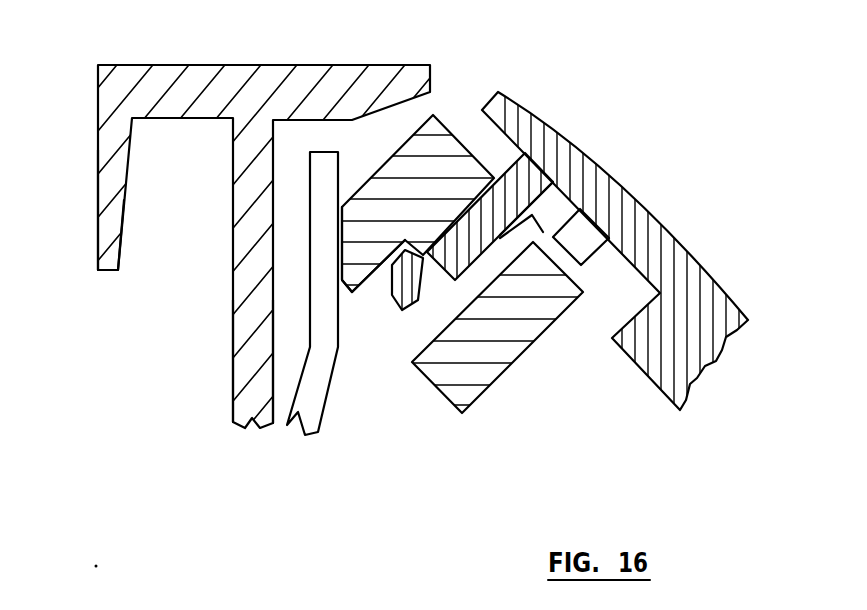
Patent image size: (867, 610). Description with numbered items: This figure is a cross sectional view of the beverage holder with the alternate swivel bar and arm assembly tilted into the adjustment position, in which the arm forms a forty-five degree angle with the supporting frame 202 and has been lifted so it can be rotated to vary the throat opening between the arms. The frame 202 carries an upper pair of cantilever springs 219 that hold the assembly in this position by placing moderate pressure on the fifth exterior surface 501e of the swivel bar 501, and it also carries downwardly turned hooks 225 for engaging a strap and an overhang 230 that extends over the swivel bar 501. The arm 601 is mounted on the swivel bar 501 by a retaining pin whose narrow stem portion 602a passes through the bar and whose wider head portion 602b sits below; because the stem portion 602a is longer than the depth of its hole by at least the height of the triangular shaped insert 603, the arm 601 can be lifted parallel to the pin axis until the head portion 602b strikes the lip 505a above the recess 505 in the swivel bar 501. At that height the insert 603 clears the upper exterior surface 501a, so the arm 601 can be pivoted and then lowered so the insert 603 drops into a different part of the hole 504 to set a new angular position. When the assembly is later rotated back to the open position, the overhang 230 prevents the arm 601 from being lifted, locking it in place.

The overhang 230 is at (393, 82).
The frame 202 is at (245, 327).
The downwardly turned hooks 225 is at (107, 185).
The upper pair of cantilever springs 219 is at (303, 420).
The swivel bar 501 is at (490, 373).
The upper exterior surface 501a is at (442, 117).
The fifth exterior surface 501e is at (340, 261).
The hole 504 is at (559, 281).
The recess 505 is at (380, 292).
The lip 505a is at (450, 293).
The left arm 601 is at (687, 338).
The narrow stem portion 602a is at (507, 195).
The wider head portion 602b is at (412, 305).
The triangular shaped insert 603 is at (583, 235).